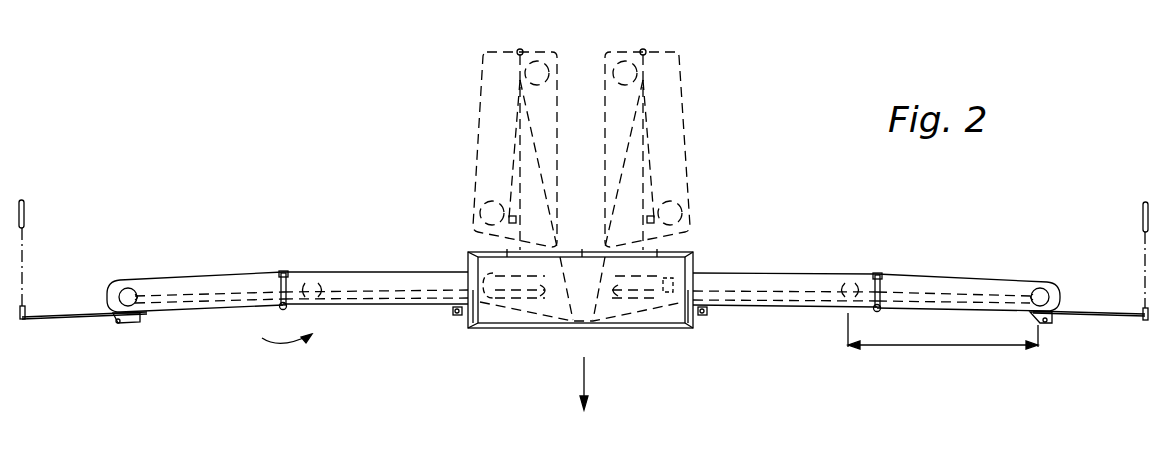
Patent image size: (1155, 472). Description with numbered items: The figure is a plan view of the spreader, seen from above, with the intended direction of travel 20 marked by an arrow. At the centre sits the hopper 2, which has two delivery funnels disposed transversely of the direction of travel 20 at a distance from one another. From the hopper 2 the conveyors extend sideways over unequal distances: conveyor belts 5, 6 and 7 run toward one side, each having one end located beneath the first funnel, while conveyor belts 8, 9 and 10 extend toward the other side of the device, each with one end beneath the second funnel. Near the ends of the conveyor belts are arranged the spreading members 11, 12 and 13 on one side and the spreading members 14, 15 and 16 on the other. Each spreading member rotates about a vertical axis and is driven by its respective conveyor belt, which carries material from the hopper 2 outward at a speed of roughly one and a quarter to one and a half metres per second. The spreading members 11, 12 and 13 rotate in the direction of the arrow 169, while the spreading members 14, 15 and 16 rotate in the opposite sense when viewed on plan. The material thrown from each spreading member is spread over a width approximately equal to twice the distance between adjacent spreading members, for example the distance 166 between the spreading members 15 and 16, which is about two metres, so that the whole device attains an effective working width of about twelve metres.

The hopper 2 is at (498, 338).
The conveyor belt 5 is at (528, 297).
The conveyor belt 6 is at (375, 288).
The conveyor belt 7 is at (198, 290).
The conveyor belt 8 is at (629, 298).
The conveyor belt 9 is at (757, 292).
The conveyor belt 10 is at (960, 297).
The spreading member 11 is at (500, 270).
The spreading member 12 is at (317, 280).
The spreading member 13 is at (132, 276).
The spreading member 14 is at (657, 269).
The spreading member 15 is at (853, 281).
The spreading member 16 is at (1046, 278).
The direction of travel 20 is at (584, 374).
The distance between adjacent spreading members 166 is at (950, 345).
The direction of rotation 169 is at (282, 330).